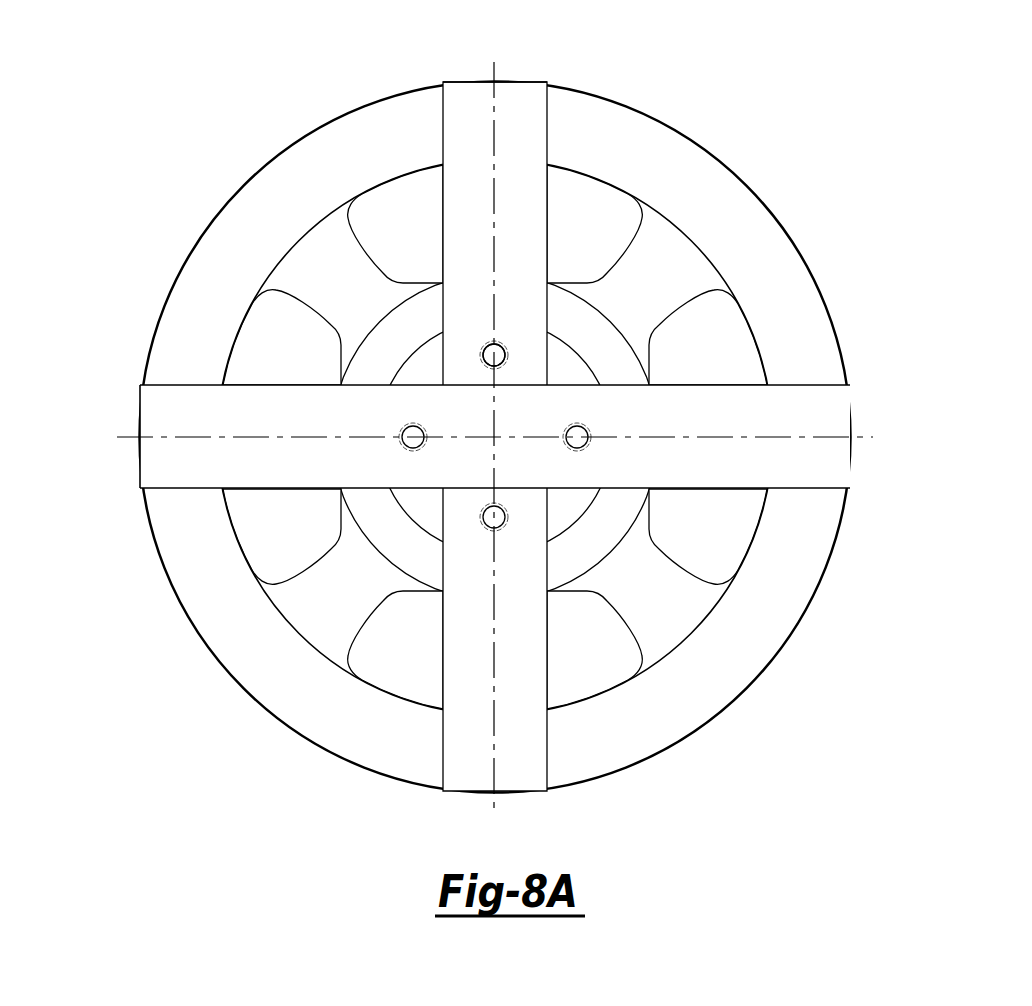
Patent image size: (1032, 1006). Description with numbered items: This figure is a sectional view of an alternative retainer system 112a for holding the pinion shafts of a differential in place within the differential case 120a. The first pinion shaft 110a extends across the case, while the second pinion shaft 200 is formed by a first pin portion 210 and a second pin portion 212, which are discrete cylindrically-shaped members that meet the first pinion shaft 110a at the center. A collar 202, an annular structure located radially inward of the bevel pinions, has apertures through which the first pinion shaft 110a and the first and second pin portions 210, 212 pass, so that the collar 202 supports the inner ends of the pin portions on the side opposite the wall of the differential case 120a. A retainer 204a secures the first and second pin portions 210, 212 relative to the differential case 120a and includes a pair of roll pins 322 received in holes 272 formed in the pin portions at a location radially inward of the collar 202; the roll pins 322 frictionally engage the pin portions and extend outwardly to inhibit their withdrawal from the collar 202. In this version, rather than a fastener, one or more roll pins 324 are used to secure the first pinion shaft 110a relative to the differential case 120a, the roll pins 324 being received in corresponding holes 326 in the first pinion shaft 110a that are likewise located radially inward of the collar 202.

The second pinion shaft 200 is at (515, 98).
The collar 202 is at (612, 531).
The retainer 204a is at (506, 352).
The first pin portion 210 is at (467, 777).
The second pin portion 212 is at (453, 105).
The holes 272 is at (479, 355).
The roll pins 322 is at (480, 518).
The roll pins 324 is at (403, 426).
The holes 326 is at (588, 447).
The first pinion shaft 110a is at (165, 464).
The retainer system 112a is at (547, 63).
The differential case 120a is at (802, 584).